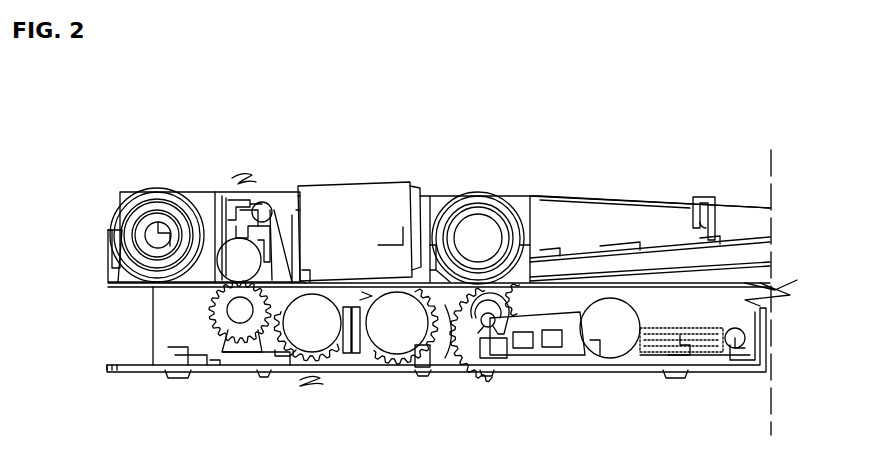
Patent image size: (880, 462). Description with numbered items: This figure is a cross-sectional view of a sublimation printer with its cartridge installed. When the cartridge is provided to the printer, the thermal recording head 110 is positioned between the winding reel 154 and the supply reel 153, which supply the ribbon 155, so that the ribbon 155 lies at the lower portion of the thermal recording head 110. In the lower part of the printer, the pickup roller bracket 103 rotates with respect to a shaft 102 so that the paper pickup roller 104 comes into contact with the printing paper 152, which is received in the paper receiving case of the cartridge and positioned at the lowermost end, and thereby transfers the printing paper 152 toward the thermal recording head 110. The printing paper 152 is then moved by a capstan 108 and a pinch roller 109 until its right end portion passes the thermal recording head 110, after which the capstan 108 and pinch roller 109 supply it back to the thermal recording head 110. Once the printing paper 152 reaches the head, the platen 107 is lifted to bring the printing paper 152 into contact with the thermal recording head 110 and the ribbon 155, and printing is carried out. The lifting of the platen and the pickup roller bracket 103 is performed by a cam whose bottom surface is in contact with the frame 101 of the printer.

The frame 101 is at (762, 322).
The shaft 102 is at (487, 322).
The pickup roller bracket 103 is at (535, 345).
The paper pickup roller 104 is at (613, 337).
The platen 107 is at (317, 327).
The capstan 108 is at (238, 313).
The pinch roller 109 is at (233, 263).
The thermal recording head 110 is at (338, 203).
The printing paper 152 is at (670, 258).
The supply reel 153 is at (478, 208).
The winding reel 154 is at (152, 215).
The ribbon 155 is at (282, 212).